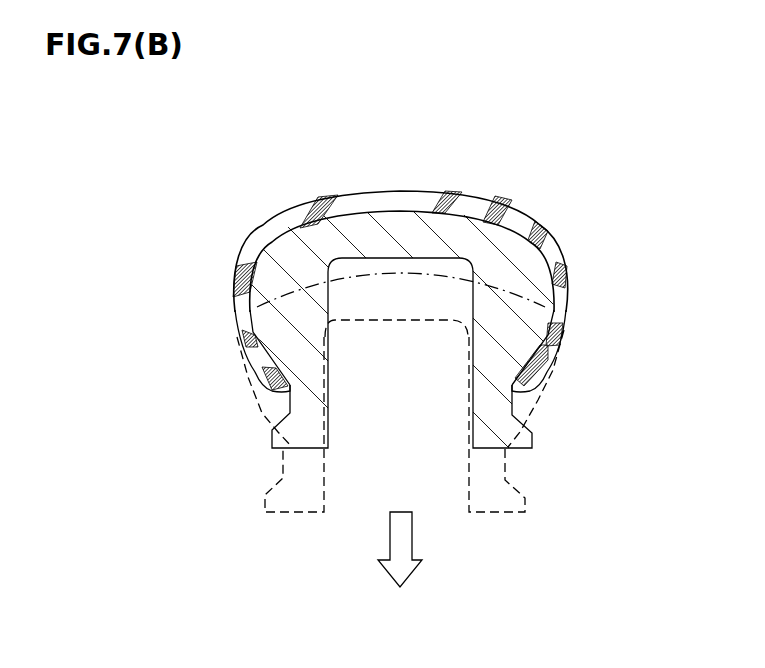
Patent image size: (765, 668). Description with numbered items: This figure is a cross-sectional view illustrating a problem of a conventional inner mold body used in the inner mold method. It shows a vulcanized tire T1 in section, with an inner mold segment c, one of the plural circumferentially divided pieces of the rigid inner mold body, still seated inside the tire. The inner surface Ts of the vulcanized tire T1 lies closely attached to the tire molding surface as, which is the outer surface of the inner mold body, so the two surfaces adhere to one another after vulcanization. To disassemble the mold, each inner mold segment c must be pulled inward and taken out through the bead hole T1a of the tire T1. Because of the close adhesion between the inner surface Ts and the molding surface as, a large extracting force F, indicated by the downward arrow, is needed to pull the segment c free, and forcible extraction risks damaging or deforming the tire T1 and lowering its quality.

The vulcanized tire T1 is at (353, 203).
The inner mold segment c is at (418, 237).
The inner surface of the vulcanized tire Ts is at (482, 218).
The tire molding surface as is at (512, 220).
The bead hole T1a is at (558, 395).
The extracting force F is at (412, 537).